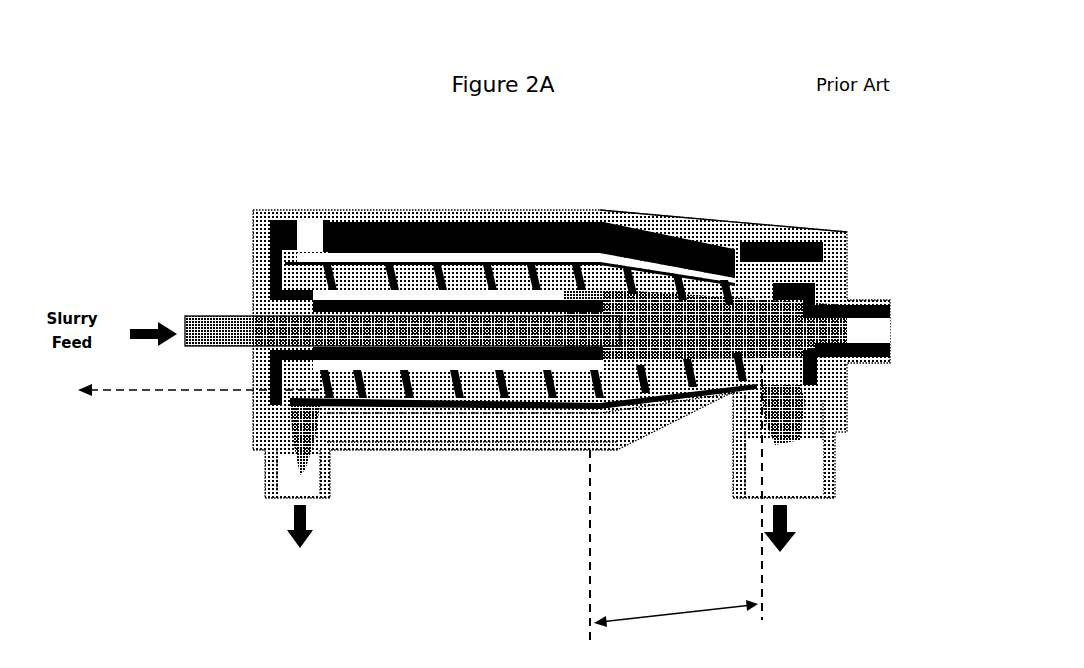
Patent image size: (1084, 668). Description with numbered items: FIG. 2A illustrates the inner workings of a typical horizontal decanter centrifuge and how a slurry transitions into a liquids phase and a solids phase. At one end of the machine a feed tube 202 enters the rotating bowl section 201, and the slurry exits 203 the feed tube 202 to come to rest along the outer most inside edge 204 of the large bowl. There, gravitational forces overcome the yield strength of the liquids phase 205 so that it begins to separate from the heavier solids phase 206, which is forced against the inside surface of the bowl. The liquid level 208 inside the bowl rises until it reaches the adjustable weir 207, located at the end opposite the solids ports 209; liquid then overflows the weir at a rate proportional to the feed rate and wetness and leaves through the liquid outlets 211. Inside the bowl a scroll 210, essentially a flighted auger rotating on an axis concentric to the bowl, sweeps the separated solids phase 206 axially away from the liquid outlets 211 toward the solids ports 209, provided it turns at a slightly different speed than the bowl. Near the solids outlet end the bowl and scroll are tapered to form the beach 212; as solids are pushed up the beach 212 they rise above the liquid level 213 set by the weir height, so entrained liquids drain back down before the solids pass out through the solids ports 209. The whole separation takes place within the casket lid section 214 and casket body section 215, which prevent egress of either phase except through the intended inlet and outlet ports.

The bowl section 201 is at (490, 245).
The feed tube 202 is at (200, 313).
The slurry exit 203 is at (563, 333).
The outer most inside edge 204 is at (380, 262).
The liquids phase 205 is at (358, 270).
The solids phase 206 is at (783, 297).
The adjustable weir 207 is at (360, 277).
The liquid level 208 is at (360, 397).
The solids ports 209 is at (790, 262).
The scroll 210 is at (555, 400).
The liquid outlets 211 is at (330, 285).
The beach 212 is at (676, 508).
The liquid level 213 is at (186, 390).
The casket lid section 214 is at (713, 228).
The casket body section 215 is at (513, 452).